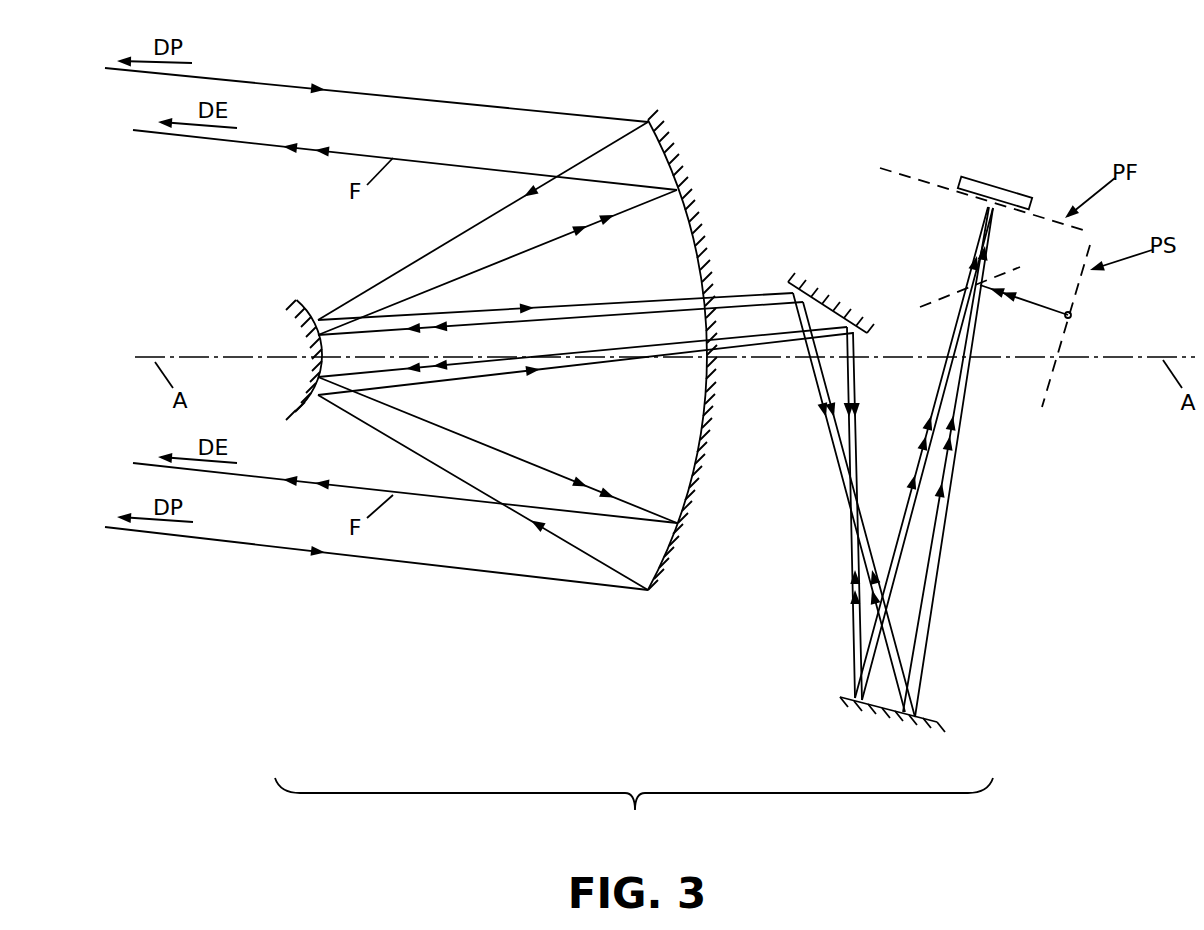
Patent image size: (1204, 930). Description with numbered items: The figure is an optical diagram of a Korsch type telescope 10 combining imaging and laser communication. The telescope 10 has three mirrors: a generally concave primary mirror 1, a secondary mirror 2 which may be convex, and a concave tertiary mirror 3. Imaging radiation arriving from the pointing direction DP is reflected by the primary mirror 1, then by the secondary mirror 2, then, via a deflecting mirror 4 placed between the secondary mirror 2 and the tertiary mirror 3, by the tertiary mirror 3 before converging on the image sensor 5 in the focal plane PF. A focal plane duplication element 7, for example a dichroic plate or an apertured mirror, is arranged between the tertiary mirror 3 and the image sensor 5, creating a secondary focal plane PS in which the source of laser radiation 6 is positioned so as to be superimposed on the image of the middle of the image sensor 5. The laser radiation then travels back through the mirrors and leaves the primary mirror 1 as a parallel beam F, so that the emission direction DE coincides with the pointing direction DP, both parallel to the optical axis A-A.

The primary mirror 1 is at (687, 540).
The secondary mirror 2 is at (300, 335).
The tertiary mirror 3 is at (871, 717).
The deflecting mirror 4 is at (828, 310).
The image sensor 5 is at (1000, 189).
The source of laser radiation 6 is at (1074, 316).
The focal plane duplication element 7 is at (958, 295).
The telescope 10 is at (634, 811).